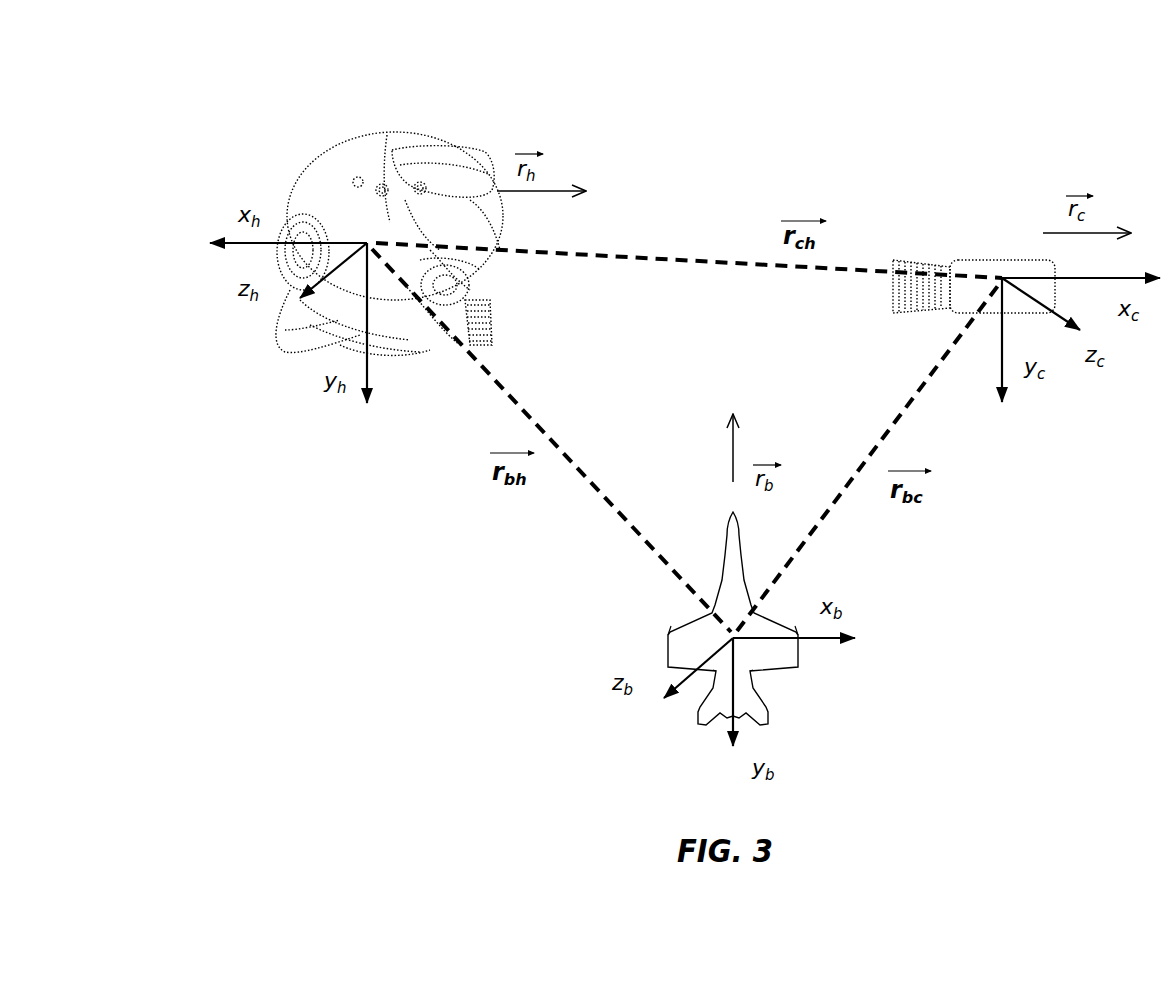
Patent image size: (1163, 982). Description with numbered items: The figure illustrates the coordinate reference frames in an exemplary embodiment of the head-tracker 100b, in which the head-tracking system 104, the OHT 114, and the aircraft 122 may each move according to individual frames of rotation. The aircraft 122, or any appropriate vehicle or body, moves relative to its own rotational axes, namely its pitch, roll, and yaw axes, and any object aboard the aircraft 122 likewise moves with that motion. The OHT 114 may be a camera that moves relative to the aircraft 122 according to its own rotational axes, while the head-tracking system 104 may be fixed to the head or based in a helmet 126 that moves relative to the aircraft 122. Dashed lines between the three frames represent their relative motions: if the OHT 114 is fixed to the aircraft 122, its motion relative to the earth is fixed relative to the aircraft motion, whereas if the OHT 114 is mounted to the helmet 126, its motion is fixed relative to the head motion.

The head-tracker 100b is at (203, 128).
The head-tracking system 104 is at (407, 147).
The helmet 126 is at (333, 181).
The OHT 114 is at (1003, 260).
The aircraft 122 is at (790, 670).